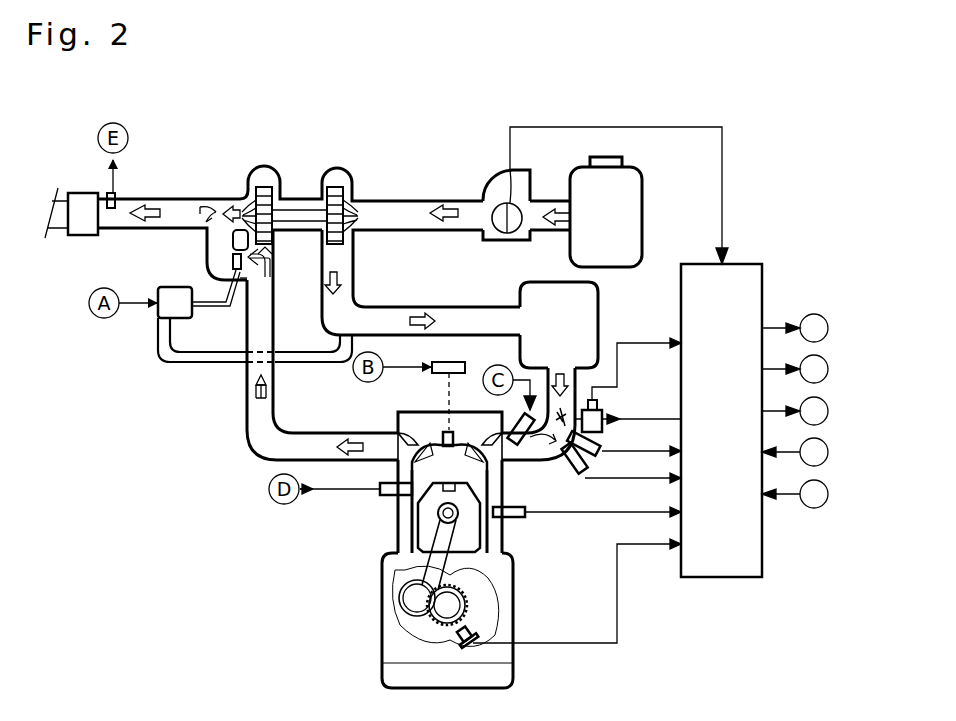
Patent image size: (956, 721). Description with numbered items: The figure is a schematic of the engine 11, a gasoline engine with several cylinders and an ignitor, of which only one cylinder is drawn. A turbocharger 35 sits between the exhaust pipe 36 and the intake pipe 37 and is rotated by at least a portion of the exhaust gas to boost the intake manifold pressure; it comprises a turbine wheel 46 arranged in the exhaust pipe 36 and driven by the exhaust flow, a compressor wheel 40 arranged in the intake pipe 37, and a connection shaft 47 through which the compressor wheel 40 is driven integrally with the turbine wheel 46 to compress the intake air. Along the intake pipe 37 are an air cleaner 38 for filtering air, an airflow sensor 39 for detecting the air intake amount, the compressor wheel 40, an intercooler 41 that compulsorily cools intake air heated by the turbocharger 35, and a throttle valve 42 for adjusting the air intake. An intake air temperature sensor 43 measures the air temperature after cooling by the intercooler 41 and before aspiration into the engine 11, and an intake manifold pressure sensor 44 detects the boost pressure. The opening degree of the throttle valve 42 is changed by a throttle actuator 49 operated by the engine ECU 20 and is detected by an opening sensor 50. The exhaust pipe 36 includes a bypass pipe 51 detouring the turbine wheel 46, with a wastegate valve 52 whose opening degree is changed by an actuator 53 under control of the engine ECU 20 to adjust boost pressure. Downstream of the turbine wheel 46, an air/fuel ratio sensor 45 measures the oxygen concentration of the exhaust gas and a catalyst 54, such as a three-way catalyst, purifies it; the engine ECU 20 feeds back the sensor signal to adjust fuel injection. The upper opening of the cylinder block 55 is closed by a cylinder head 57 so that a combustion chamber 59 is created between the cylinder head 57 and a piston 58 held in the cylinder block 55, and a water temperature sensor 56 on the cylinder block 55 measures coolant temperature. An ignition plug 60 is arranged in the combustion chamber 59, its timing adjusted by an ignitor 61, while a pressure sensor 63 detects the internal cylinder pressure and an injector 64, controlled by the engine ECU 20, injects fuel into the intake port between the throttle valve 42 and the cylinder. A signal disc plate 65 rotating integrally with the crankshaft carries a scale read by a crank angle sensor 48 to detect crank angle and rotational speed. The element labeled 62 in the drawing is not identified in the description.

The engine 11 is at (192, 128).
The engine ECU 20 is at (762, 283).
The turbocharger 35 is at (320, 178).
The exhaust pipe 36 is at (238, 418).
The intake pipe 37 is at (424, 186).
The air cleaner 38 is at (644, 174).
The airflow sensor 39 is at (513, 198).
The compressor wheel 40 is at (335, 186).
The intercooler 41 is at (600, 301).
The throttle valve 42 is at (562, 410).
The intake air temperature sensor 43 is at (601, 456).
The intake manifold pressure sensor 44 is at (585, 479).
The air/fuel ratio sensor 45 is at (116, 196).
The turbine wheel 46 is at (256, 184).
The connection shaft 47 is at (297, 208).
The crank angle sensor 48 is at (470, 634).
The throttle actuator 49 is at (605, 428).
The opening sensor 50 is at (597, 405).
The bypass pipe 51 is at (206, 250).
The wastegate valve 52 is at (240, 276).
The actuator 53 is at (158, 318).
The catalyst 54 is at (79, 193).
The cylinder block 55 is at (500, 540).
The water temperature sensor 56 is at (515, 518).
The cylinder head 57 is at (398, 418).
The piston 58 is at (427, 517).
The combustion chamber 59 is at (460, 479).
The ignition plug 60 is at (443, 434).
The ignitor 61 is at (462, 364).
The crankcase 62 is at (396, 594).
The pressure sensor 63 is at (382, 487).
The injector 64 is at (517, 425).
The signal disc plate 65 is at (468, 604).